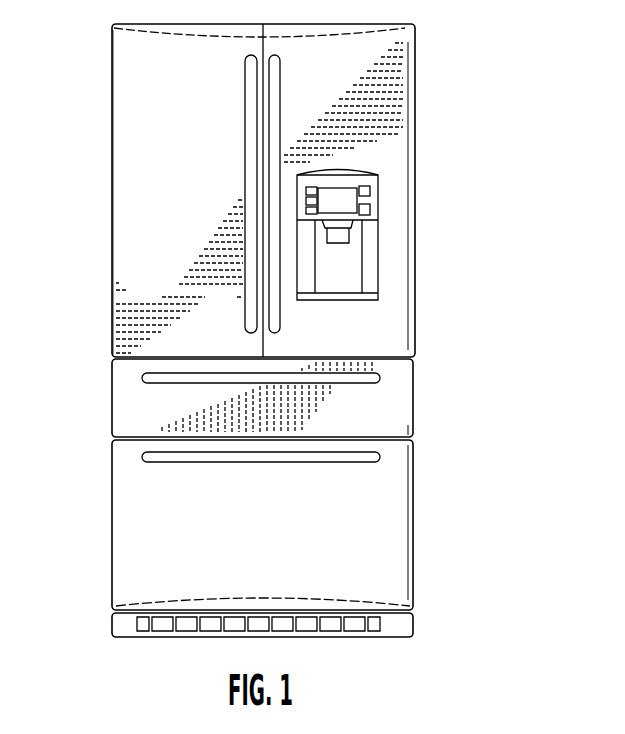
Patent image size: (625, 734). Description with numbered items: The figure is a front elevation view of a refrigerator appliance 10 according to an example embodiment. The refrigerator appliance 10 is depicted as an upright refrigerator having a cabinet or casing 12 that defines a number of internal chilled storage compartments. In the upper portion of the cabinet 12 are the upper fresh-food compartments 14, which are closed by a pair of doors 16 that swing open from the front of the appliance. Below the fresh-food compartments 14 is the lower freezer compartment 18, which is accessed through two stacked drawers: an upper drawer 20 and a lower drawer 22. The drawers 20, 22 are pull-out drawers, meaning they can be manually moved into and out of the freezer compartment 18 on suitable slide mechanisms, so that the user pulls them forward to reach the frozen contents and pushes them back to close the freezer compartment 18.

The refrigerator appliance 10 is at (472, 108).
The cabinet or casing 12 is at (415, 275).
The upper fresh-food compartments 14 is at (138, 167).
The doors 16 is at (175, 246).
The lower freezer compartment 18 is at (392, 400).
The upper drawer 20 is at (160, 420).
The lower drawer 22 is at (275, 545).